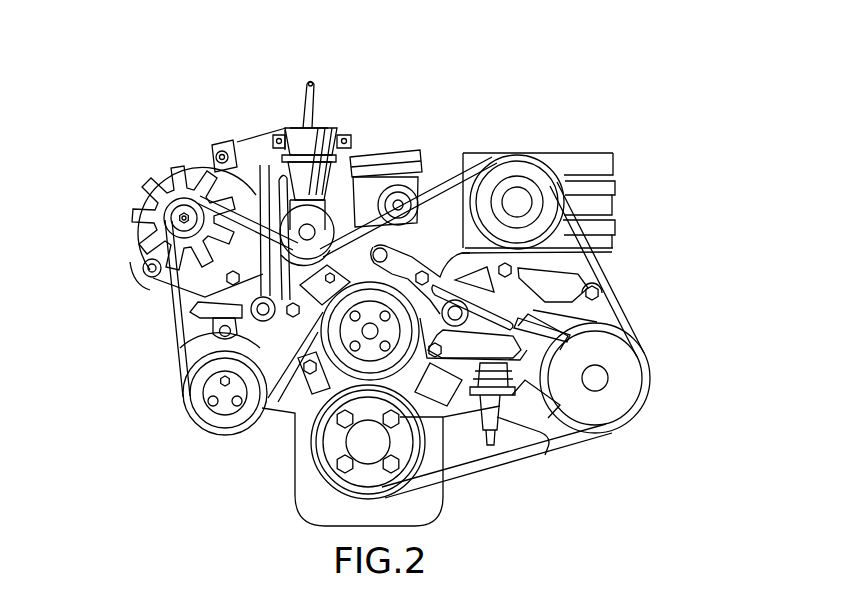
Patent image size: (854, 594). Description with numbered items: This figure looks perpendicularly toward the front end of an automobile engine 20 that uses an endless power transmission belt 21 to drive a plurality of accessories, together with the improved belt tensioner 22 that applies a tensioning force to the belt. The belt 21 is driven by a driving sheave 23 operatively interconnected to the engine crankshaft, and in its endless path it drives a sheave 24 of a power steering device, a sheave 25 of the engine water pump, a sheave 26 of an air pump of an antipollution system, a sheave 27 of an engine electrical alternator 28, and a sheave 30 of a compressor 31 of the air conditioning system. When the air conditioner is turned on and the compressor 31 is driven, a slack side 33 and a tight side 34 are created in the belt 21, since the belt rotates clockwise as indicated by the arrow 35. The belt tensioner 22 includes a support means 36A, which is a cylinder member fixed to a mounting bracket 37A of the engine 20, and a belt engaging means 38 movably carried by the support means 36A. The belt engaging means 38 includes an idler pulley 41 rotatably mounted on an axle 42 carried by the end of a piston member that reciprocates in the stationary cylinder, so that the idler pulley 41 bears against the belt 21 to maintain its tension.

The automobile engine 20 is at (699, 91).
The endless power transmission belt 21 is at (175, 330).
The belt tensioner 22 is at (341, 122).
The driving sheave 23 is at (316, 467).
The power steering sheave 24 is at (650, 383).
The water pump sheave 25 is at (321, 330).
The air pump sheave 26 is at (183, 398).
The alternator sheave 27 is at (164, 219).
The engine electrical alternator 28 is at (140, 185).
The compressor sheave 30 is at (520, 152).
The compressor 31 is at (618, 200).
The slack side 33 is at (437, 178).
The tight side 34 is at (622, 296).
The arrow 35 is at (520, 469).
The support means 36A is at (287, 128).
The mounting bracket 37A is at (250, 138).
The belt engaging means 38 is at (334, 202).
The idler pulley 41 is at (240, 303).
The axle 42 is at (305, 232).